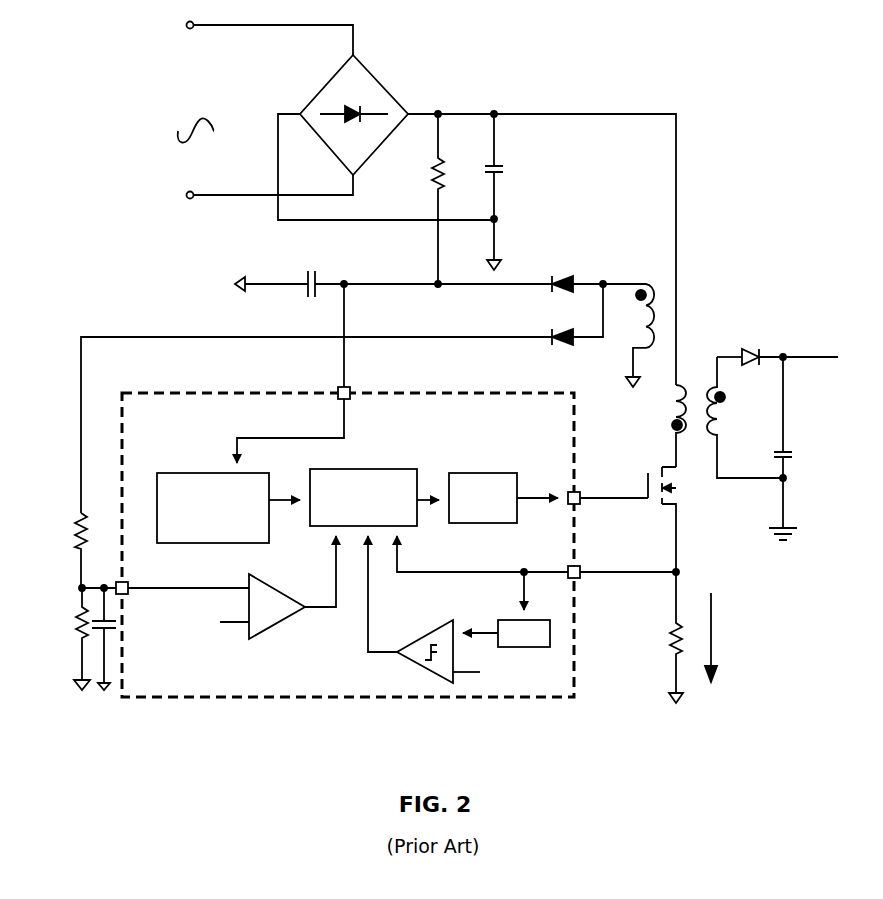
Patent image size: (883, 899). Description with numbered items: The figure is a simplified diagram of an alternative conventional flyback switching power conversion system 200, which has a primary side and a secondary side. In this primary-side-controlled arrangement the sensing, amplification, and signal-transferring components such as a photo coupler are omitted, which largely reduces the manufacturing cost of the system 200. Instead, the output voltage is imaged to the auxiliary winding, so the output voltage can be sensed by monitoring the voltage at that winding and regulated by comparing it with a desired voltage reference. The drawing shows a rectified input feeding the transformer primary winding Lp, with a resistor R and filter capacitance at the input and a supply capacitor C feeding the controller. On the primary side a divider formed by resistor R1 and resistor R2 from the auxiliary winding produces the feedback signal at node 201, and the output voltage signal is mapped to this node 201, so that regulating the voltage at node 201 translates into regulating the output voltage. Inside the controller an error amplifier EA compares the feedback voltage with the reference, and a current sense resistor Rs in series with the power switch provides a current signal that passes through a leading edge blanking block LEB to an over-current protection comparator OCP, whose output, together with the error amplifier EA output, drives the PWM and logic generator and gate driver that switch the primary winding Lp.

The system 200 is at (445, 363).
The node 201 is at (124, 594).
The input resistor R is at (429, 199).
The feedback divider upper resistor R1 is at (70, 550).
The feedback divider lower resistor R2 is at (71, 639).
The current sense resistor Rs is at (664, 637).
The transformer primary winding Lp is at (668, 426).
The supply capacitor C is at (294, 278).
The error amplifier EA is at (277, 606).
The over-current protection comparator OCP is at (425, 642).
The leading edge blanking circuit LEB is at (524, 633).